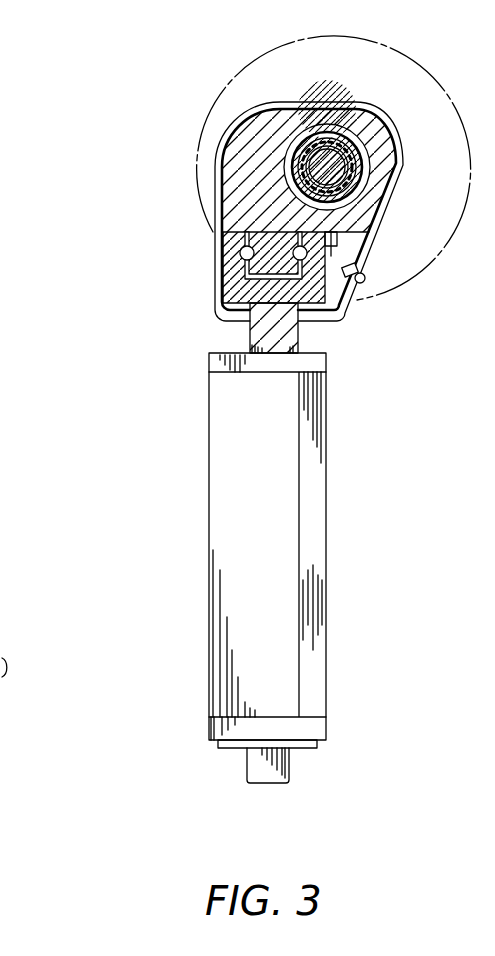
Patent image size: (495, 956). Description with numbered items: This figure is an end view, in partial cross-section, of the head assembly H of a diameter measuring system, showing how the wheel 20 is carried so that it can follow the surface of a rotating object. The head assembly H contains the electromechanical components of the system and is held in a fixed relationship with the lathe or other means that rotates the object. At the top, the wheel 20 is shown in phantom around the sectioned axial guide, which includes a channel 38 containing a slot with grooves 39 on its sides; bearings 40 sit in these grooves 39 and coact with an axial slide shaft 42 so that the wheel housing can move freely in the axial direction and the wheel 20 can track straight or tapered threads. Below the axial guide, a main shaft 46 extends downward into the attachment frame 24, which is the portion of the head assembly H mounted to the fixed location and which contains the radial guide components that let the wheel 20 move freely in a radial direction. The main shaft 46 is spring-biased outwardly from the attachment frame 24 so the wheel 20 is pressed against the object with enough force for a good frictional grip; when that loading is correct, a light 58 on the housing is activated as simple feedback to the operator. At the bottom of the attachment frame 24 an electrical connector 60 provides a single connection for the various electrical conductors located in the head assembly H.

The wheel 20 is at (212, 103).
The attachment frame 24 is at (209, 423).
The channel 38 is at (228, 273).
The grooves 39 is at (308, 252).
The bearings 40 is at (240, 252).
The axial slide shaft 42 is at (240, 282).
The main shaft 46 is at (262, 333).
The light 58 is at (365, 280).
The electrical connector 60 is at (260, 770).
The head assembly H is at (140, 511).